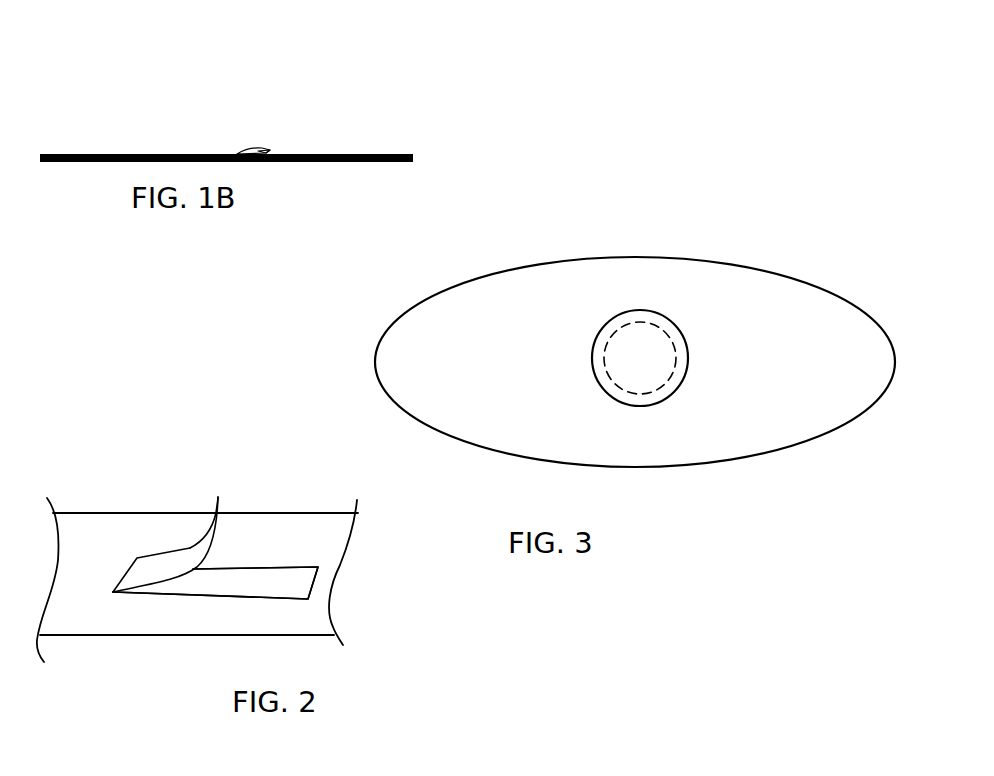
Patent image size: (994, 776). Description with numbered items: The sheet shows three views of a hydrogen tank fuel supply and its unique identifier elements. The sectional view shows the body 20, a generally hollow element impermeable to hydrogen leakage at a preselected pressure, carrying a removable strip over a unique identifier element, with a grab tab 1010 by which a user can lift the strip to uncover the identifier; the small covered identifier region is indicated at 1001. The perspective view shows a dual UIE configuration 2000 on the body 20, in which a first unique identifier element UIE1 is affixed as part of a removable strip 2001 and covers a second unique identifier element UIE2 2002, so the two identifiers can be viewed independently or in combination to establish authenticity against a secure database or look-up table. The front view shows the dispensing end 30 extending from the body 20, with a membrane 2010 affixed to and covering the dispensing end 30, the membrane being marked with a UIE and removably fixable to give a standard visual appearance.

In FIG. 1B, the body 20 is at (400, 154).
In FIG. 2, the body 20 is at (83, 532).
In FIG. 3, the body 20 is at (706, 312).
In FIG. 1B, the label 1001 is at (243, 153).
In FIG. 1B, the grab tab 1010 is at (263, 148).
In FIG. 2, the dual UIE configuration 2000 is at (232, 566).
In FIG. 2, the removable strip 2001 is at (215, 583).
In FIG. 2, the second unique identifier element 2002 is at (196, 549).
In FIG. 3, the dispensing end 30 is at (657, 311).
In FIG. 3, the membrane 2010 is at (640, 358).